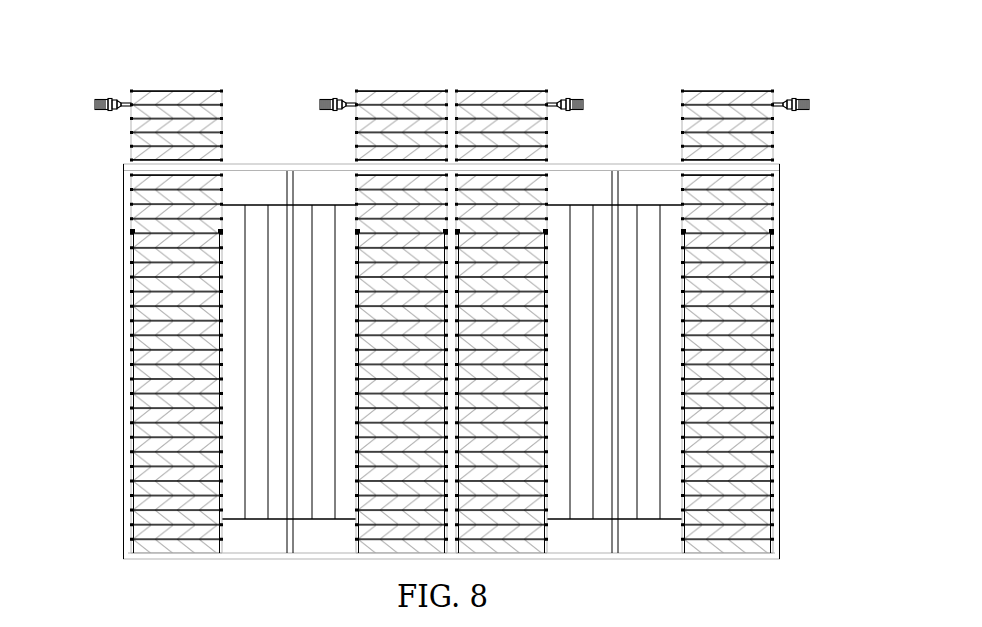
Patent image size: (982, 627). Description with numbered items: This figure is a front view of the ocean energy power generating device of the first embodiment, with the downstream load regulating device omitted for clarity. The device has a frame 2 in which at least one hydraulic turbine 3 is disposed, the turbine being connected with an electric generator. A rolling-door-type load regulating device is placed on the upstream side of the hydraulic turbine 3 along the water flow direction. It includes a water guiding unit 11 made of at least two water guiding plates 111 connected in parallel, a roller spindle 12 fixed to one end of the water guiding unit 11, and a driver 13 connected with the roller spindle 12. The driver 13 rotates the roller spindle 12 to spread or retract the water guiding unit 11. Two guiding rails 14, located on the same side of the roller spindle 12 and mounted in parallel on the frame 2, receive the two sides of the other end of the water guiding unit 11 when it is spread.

The frame 2 is at (178, 554).
The hydraulic turbine 3 is at (245, 399).
The water guiding unit 11 is at (406, 90).
The roller spindle 12 is at (125, 99).
The driver 13 is at (808, 101).
The guiding rail 14 is at (131, 238).
The water guiding plate 111 is at (131, 125).